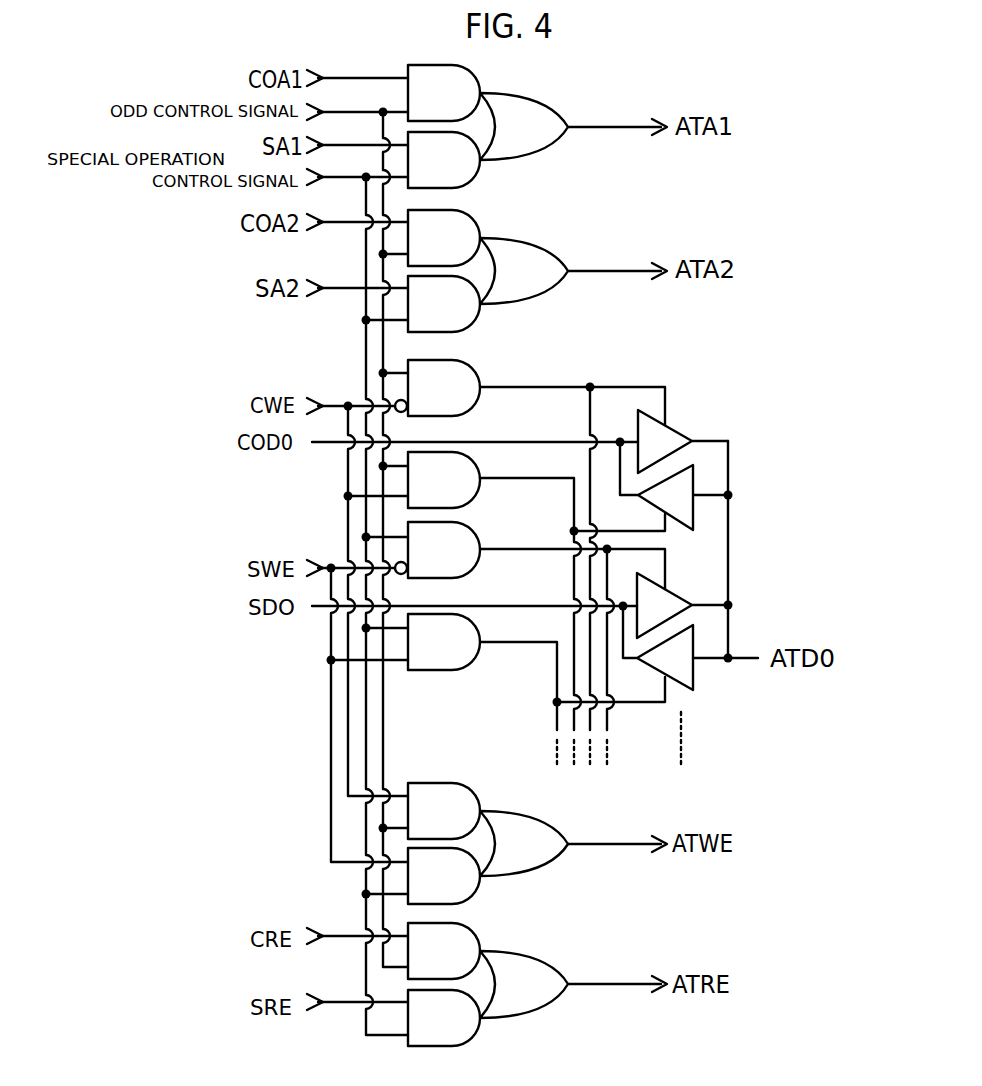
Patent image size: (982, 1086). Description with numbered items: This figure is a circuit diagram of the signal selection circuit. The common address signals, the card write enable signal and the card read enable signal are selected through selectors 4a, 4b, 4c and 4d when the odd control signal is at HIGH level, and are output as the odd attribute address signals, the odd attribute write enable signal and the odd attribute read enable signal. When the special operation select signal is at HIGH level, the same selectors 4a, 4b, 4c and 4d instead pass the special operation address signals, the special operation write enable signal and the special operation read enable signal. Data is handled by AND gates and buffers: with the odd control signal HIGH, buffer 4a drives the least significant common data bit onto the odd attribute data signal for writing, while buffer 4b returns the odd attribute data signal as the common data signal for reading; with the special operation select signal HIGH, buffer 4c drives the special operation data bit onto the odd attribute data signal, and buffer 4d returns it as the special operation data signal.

The selector / buffer 4a is at (552, 95).
The selector / buffer 4b is at (552, 239).
The selector / buffer 4c is at (550, 812).
The selector / buffer 4d is at (550, 952).